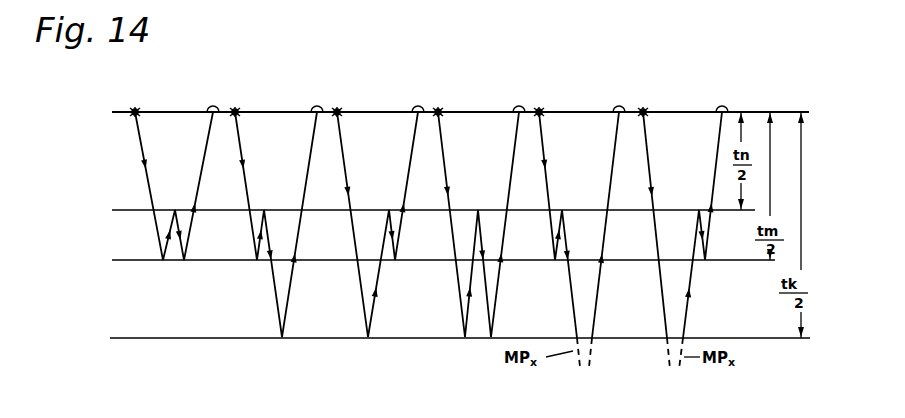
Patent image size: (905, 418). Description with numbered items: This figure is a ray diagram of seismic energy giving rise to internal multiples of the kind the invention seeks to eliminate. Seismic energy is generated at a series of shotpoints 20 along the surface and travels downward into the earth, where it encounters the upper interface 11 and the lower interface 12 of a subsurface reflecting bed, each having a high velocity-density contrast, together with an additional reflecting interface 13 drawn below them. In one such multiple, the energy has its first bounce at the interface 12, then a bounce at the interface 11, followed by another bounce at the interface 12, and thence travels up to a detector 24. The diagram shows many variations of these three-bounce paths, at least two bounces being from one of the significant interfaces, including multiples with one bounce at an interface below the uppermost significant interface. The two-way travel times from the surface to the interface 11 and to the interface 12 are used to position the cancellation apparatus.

The shotpoint 20 is at (650, 95).
The detector 24 is at (220, 71).
The upper interface 11 is at (121, 210).
The lower interface 12 is at (121, 260).
The additional reflecting interface 13 is at (126, 338).